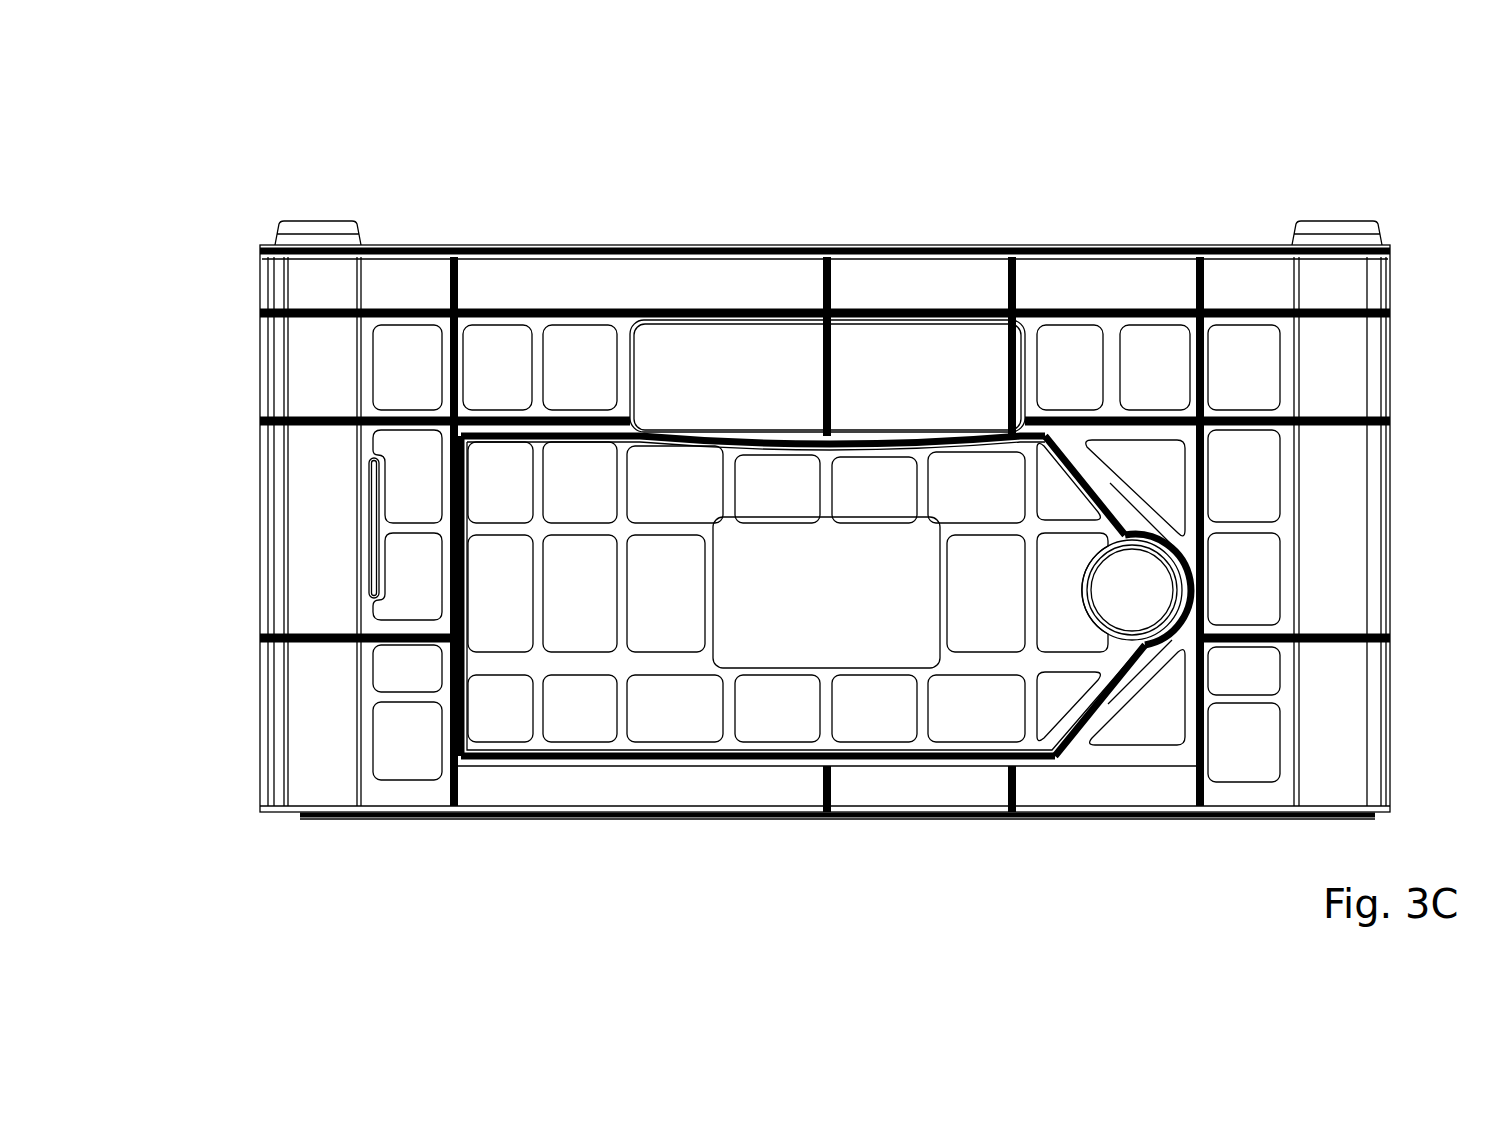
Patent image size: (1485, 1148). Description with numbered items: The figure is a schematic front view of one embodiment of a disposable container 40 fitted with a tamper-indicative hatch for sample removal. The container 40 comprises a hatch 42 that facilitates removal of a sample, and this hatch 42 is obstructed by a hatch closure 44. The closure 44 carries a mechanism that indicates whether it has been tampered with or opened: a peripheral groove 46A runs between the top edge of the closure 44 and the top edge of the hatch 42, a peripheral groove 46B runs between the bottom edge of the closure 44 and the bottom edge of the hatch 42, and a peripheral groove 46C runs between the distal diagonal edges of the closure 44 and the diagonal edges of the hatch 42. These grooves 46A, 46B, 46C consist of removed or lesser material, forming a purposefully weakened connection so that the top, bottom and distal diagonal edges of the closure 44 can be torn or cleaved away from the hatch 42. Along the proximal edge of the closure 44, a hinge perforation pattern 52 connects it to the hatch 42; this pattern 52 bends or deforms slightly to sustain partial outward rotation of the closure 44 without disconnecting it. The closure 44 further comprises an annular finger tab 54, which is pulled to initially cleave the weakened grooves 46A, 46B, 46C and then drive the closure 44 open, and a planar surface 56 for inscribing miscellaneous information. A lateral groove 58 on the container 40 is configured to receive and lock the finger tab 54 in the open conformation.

The disposable container 40 is at (744, 443).
The hatch 42 is at (728, 832).
The hatch closure 44 is at (610, 528).
The peripheral groove 46A is at (690, 420).
The peripheral groove 46B is at (705, 768).
The peripheral groove 46C is at (1093, 462).
The hinge perforation pattern 52 is at (455, 590).
The annular finger tab 54 is at (1180, 582).
The planar surface 56 is at (857, 585).
The lateral groove 58 is at (368, 528).